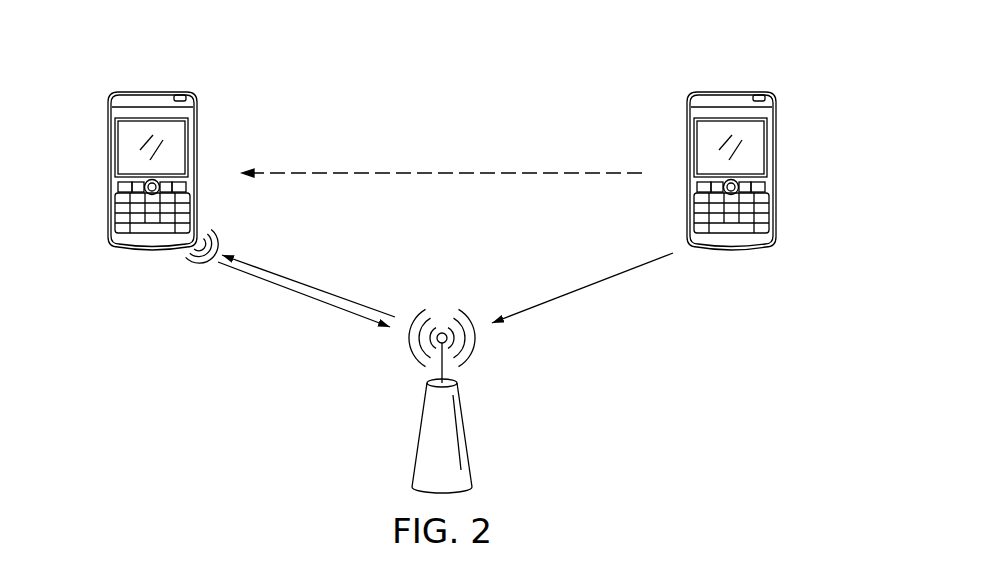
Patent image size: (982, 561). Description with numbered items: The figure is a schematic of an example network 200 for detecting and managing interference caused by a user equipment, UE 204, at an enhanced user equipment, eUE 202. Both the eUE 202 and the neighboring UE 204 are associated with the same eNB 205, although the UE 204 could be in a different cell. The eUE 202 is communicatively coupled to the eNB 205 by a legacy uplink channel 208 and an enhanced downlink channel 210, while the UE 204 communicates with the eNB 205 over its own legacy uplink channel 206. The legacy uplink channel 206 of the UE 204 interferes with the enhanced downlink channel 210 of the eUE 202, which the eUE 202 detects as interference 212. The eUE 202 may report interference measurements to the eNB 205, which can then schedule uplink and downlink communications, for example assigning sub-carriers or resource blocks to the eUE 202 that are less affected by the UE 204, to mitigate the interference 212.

The network 200 is at (261, 62).
The eUE 202 is at (108, 164).
The UE 204 is at (778, 166).
The eNB 205 is at (418, 432).
The legacy uplink channel 206 is at (585, 287).
The legacy uplink channel 208 is at (299, 292).
The enhanced downlink channel 210 is at (312, 288).
The interference 212 is at (449, 172).